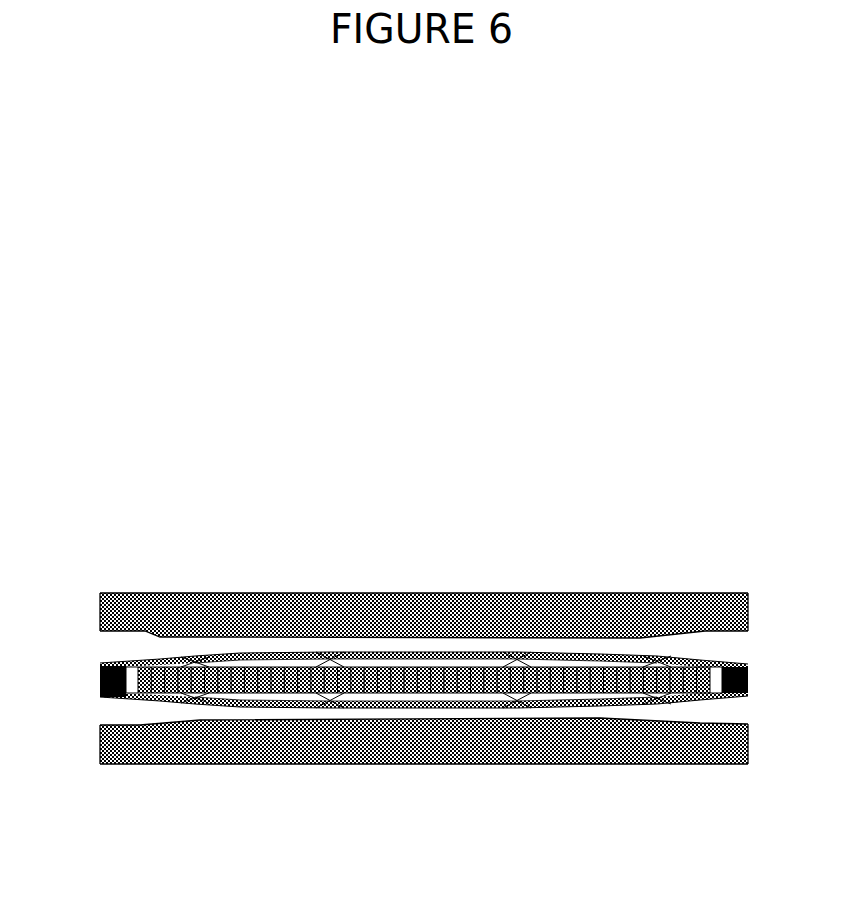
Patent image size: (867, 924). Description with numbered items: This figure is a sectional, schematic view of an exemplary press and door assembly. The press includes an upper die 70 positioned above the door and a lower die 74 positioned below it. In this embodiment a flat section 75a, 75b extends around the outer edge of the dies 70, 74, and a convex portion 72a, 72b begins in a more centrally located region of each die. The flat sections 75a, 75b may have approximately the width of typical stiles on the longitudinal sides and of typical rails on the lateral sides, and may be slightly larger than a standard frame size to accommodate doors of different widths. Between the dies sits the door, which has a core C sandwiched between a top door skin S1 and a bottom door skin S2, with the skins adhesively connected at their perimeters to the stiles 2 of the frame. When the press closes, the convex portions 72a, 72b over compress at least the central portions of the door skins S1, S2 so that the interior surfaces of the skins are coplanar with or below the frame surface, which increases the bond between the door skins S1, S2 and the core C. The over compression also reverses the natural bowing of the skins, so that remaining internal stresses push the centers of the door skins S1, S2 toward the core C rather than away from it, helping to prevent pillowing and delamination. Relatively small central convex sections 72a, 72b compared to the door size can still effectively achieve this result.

The upper die 70 is at (568, 613).
The lower die 74 is at (561, 752).
The convex portion 72a is at (409, 638).
The convex portion 72b is at (421, 718).
The flat section 75a is at (125, 622).
The flat section 75b is at (131, 725).
The top door skin S1 is at (248, 658).
The bottom door skin S2 is at (238, 700).
The core C is at (125, 700).
The stiles 2 is at (100, 667).